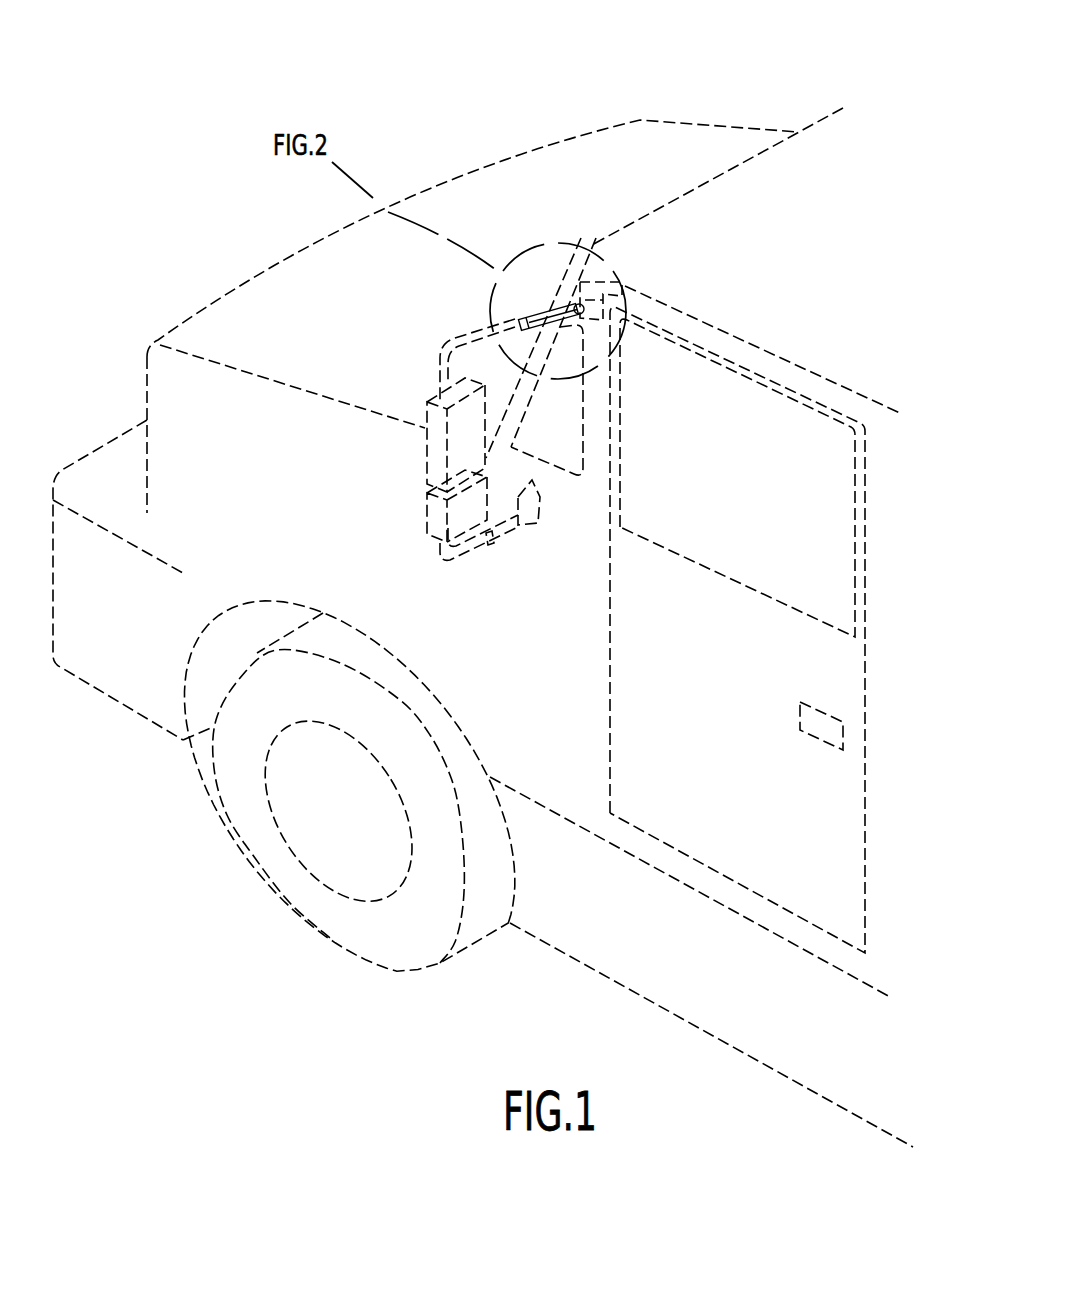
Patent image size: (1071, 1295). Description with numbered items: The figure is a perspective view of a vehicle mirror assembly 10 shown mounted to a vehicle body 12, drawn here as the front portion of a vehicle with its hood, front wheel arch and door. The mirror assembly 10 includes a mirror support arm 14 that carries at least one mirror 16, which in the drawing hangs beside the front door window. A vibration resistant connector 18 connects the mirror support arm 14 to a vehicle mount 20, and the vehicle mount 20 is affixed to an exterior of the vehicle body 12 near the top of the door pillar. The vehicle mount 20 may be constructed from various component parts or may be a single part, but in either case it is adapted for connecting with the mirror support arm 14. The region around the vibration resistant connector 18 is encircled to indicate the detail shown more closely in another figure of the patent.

The vehicle mirror assembly 10 is at (415, 372).
The vehicle body 12 is at (785, 188).
The mirror support arm 14 is at (470, 333).
The mirror 16 is at (435, 519).
The vibration resistant connector 18 is at (543, 306).
The vehicle mount 20 is at (593, 287).